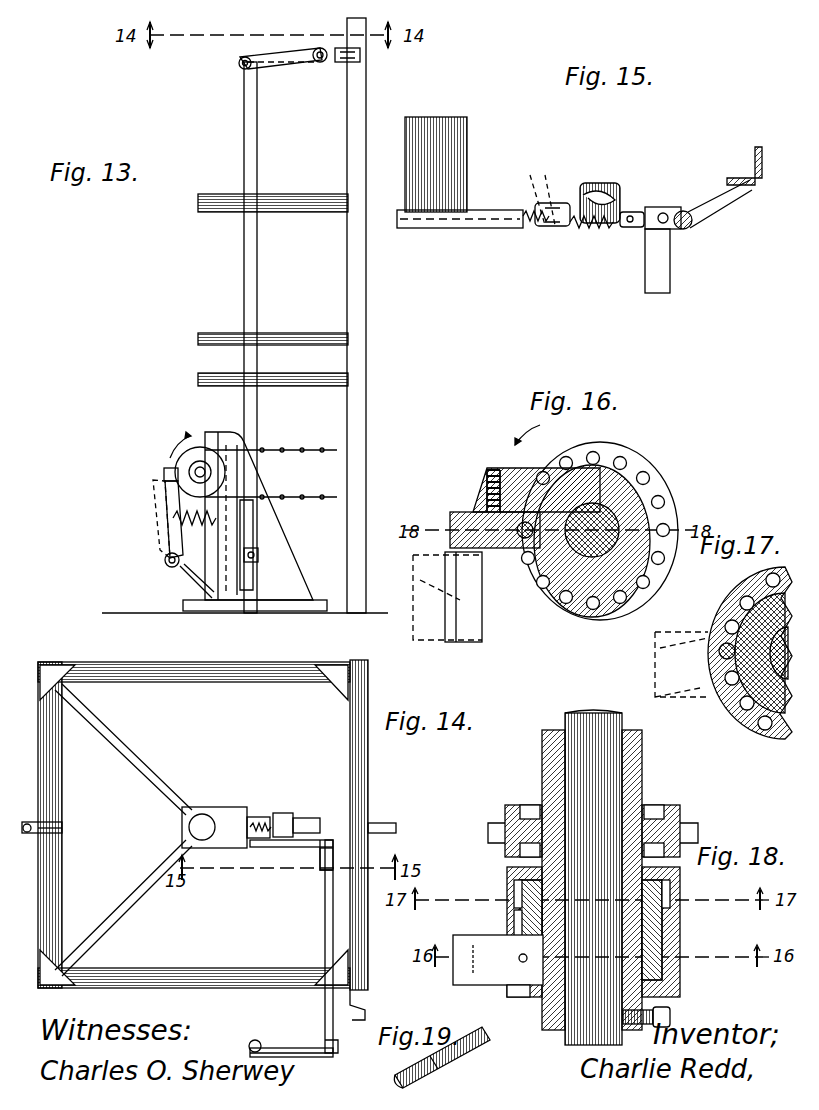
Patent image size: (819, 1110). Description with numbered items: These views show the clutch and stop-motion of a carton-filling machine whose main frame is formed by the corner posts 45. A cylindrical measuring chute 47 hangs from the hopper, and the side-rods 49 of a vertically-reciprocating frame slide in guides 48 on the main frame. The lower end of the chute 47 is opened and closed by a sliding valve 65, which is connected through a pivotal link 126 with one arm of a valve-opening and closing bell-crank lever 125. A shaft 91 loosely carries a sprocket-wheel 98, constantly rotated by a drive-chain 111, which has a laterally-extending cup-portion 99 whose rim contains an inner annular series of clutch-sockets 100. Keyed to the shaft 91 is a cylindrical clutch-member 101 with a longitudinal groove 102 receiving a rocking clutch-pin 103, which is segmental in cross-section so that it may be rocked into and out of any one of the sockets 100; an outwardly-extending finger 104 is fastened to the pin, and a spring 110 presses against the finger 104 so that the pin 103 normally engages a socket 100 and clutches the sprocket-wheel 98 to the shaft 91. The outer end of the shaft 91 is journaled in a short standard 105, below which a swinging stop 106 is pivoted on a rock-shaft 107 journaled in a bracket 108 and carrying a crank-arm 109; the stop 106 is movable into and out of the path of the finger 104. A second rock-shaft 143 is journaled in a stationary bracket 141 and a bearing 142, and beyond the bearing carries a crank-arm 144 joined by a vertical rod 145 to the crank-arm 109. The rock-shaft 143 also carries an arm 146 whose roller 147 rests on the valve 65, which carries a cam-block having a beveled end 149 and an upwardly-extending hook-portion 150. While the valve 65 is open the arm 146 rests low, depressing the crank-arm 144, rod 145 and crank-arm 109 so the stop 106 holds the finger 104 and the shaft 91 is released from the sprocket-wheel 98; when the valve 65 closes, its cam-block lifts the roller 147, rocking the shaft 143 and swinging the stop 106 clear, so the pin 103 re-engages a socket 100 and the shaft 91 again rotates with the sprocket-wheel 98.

In FIG. 13, the corner posts 45 is at (366, 298).
In FIG. 14, the corner posts 45 is at (45, 662).
In FIG. 15, the cylindrical measuring-receptacle or chute 47 is at (467, 148).
In FIG. 14, the cylindrical measuring-receptacle or chute 47 is at (207, 814).
In FIG. 14, the guides 48 is at (30, 835).
In FIG. 14, the side-rods 49 is at (28, 822).
In FIG. 15, the sliding valve 65 is at (530, 228).
In FIG. 14, the sliding valve 65 is at (288, 812).
In FIG. 13, the shaft 91 is at (196, 470).
In FIG. 16, the shaft 91 is at (620, 525).
In FIG. 17, the shaft 91 is at (783, 653).
In FIG. 18, the shaft 91 is at (600, 768).
In FIG. 13, the sprocket-wheel 98 is at (196, 444).
In FIG. 18, the sprocket-wheel 98 is at (508, 806).
In FIG. 16, the cup-portion 99 is at (668, 478).
In FIG. 17, the cup-portion 99 is at (755, 728).
In FIG. 18, the cup-portion 99 is at (508, 875).
In FIG. 16, the clutch-sockets 100 is at (600, 460).
In FIG. 17, the clutch-sockets 100 is at (745, 598).
In FIG. 18, the clutch-sockets 100 is at (514, 896).
In FIG. 16, the cylindrical clutch-member 101 is at (575, 585).
In FIG. 17, the cylindrical clutch-member 101 is at (772, 703).
In FIG. 18, the cylindrical clutch-member 101 is at (655, 957).
In FIG. 18, the longitudinal groove or socket 102 is at (520, 997).
In FIG. 16, the rocking clutch-pin 103 is at (530, 545).
In FIG. 17, the rocking clutch-pin 103 is at (725, 660).
In FIG. 18, the rocking clutch-pin 103 is at (514, 918).
In FIG. 19, the rocking clutch-pin 103 is at (470, 1050).
In FIG. 13, the finger 104 is at (165, 472).
In FIG. 16, the finger 104 is at (450, 520).
In FIG. 17, the finger 104 is at (656, 648).
In FIG. 18, the finger 104 is at (498, 960).
In FIG. 13, the standard 105 is at (272, 545).
In FIG. 13, the swinging-finger or stop 106 is at (165, 530).
In FIG. 16, the swinging-finger or stop 106 is at (470, 640).
In FIG. 13, the rock-shaft 107 is at (166, 562).
In FIG. 13, the bracket 108 is at (190, 586).
In FIG. 13, the crank-arm 109 is at (246, 564).
In FIG. 16, the spring 110 is at (485, 486).
In FIG. 13, the drive-chain 111 is at (305, 446).
In FIG. 15, the bell-crank lever 125 is at (670, 276).
In FIG. 15, the pivotal link 126 is at (642, 210).
In FIG. 14, the pivotal link 126 is at (310, 818).
In FIG. 14, the stationary bracket 141 is at (320, 863).
In FIG. 13, the bearing 142 is at (345, 50).
In FIG. 14, the bearing 142 is at (350, 1045).
In FIG. 13, the rock-shaft 143 is at (320, 63).
In FIG. 15, the rock-shaft 143 is at (692, 226).
In FIG. 14, the rock-shaft 143 is at (324, 928).
In FIG. 13, the crank-arm 144 is at (262, 65).
In FIG. 14, the crank-arm 144 is at (283, 1045).
In FIG. 13, the rod 145 is at (257, 253).
In FIG. 14, the rod 145 is at (250, 1042).
In FIG. 15, the arm 146 is at (540, 230).
In FIG. 14, the arm 146 is at (290, 848).
In FIG. 14, the roller 147 is at (260, 817).
In FIG. 15, the beveled end 149 is at (578, 230).
In FIG. 15, the hook-portion 150 is at (596, 183).
In FIG. 14, the hook-portion 150 is at (292, 847).